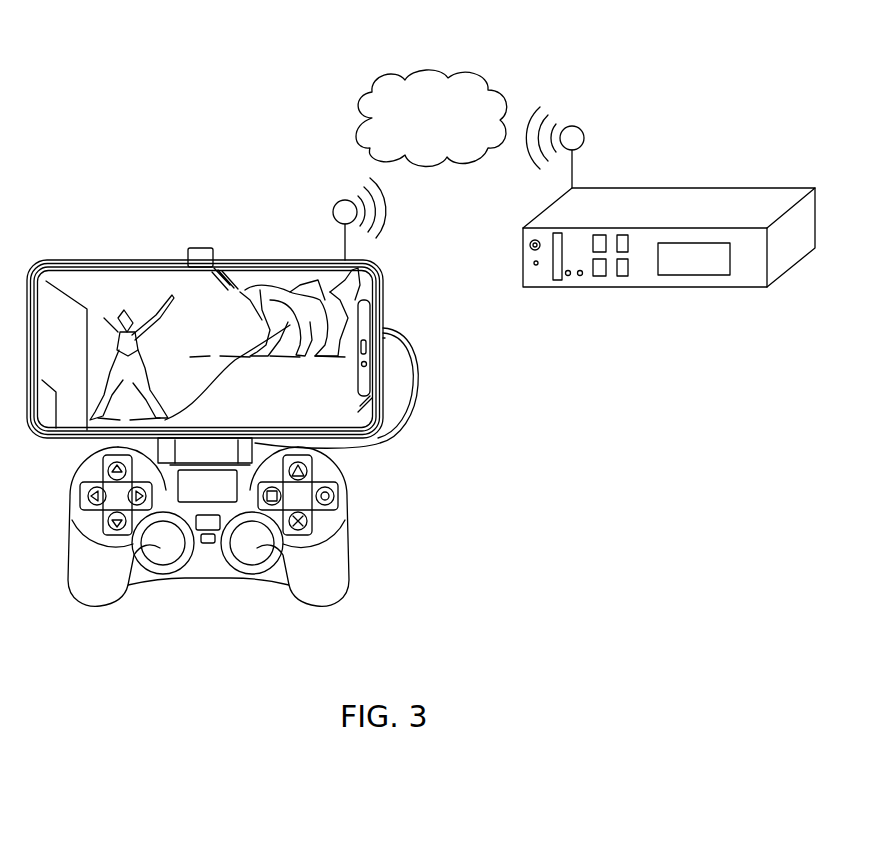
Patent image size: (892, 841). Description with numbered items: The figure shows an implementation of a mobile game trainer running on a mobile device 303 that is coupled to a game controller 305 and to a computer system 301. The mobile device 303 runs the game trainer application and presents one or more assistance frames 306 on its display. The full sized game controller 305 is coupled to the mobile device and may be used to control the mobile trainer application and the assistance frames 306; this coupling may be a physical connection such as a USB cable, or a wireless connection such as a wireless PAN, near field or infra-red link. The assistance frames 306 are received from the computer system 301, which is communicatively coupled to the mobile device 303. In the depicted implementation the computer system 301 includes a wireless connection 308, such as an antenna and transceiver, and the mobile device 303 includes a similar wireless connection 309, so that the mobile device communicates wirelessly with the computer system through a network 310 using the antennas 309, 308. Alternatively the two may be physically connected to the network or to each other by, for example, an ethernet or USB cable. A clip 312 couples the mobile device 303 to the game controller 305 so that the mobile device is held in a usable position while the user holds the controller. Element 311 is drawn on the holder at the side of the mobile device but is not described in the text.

The computer system 301 is at (757, 190).
The mobile device 303 is at (72, 258).
The game controller 305 is at (349, 548).
The assistance frames 306 is at (148, 290).
The wireless connection 308 is at (586, 146).
The wireless connection 309 is at (345, 244).
The network 310 is at (420, 72).
The clamp / holder 311 is at (418, 385).
The clip 312 is at (198, 246).